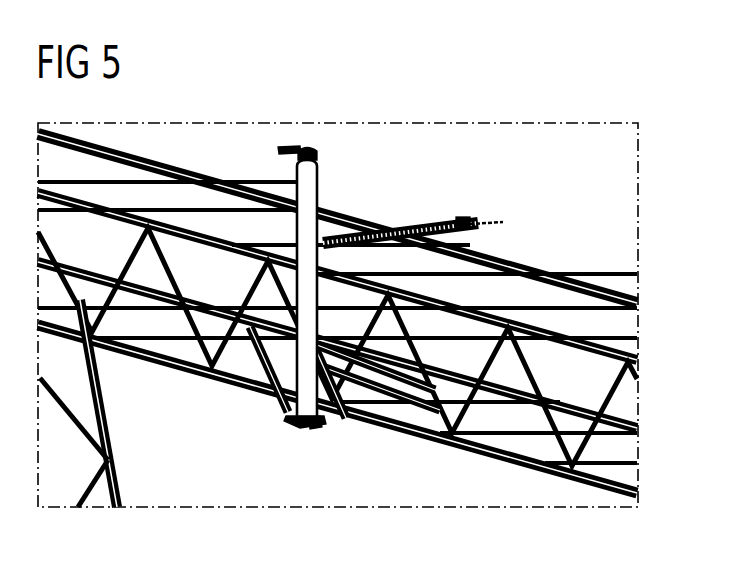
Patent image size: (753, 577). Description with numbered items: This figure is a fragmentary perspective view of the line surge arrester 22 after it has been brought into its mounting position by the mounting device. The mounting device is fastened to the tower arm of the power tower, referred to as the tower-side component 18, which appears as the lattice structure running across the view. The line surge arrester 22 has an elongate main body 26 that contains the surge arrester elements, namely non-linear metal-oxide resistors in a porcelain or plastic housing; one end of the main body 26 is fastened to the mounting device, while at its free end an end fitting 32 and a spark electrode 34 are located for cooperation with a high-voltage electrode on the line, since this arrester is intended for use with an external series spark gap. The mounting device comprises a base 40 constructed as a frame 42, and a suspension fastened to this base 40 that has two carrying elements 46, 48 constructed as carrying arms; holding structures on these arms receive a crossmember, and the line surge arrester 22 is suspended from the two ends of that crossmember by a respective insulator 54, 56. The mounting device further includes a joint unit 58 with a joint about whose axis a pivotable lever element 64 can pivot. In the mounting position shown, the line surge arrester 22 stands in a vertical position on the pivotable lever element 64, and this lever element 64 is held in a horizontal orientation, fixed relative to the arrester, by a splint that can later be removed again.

The tower-side component 18 is at (593, 292).
The line surge arrester 22 is at (289, 244).
The main body 26 is at (310, 198).
The end fitting 32 is at (305, 146).
The spark electrode 34 is at (279, 166).
The base 40 is at (385, 408).
The frame 42 is at (378, 387).
The carrying element 46 is at (262, 367).
The carrying element 48 is at (347, 420).
The insulator 54 is at (410, 226).
The insulator 56 is at (450, 220).
The joint unit 58 is at (313, 430).
The pivotable lever element 64 is at (285, 420).